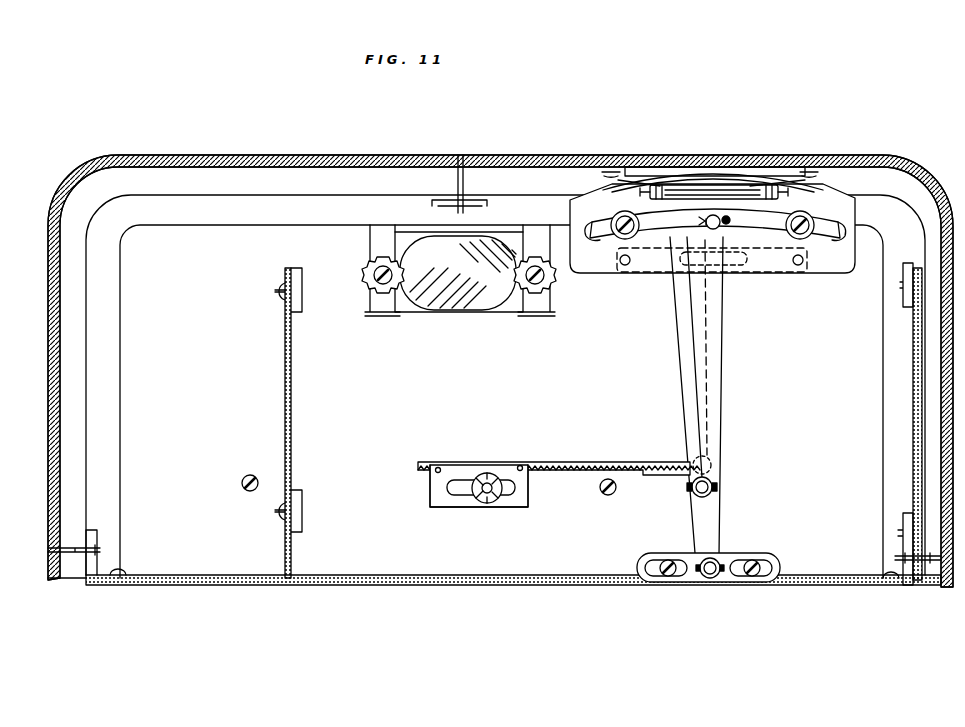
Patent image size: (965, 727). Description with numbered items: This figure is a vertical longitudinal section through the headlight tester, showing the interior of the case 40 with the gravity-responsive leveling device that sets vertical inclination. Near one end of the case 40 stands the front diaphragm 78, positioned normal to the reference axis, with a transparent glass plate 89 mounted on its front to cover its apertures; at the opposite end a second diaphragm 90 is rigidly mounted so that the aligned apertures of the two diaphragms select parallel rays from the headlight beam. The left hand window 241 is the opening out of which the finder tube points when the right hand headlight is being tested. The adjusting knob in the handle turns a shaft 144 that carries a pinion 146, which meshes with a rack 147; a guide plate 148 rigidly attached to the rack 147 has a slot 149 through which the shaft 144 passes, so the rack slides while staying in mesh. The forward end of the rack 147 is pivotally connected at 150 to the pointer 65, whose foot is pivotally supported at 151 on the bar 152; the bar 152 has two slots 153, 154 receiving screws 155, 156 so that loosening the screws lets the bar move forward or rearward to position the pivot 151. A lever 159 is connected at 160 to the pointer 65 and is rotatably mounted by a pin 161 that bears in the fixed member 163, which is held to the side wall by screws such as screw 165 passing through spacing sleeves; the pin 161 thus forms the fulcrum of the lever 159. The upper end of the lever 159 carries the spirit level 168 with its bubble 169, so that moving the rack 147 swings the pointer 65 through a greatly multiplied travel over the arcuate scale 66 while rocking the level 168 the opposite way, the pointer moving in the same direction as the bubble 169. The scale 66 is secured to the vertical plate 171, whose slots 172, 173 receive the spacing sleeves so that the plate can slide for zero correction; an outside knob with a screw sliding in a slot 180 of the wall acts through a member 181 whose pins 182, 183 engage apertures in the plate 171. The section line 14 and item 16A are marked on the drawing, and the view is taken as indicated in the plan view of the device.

The section line 14- 14 is at (712, 152).
The case 40 is at (48, 348).
The second diaphragm 90 is at (291, 428).
The transparent glass plate 89 is at (913, 392).
The diaphragm 78 is at (913, 462).
The left hand window 241 is at (463, 298).
The scale 66 is at (812, 190).
The spirit level 168 is at (703, 188).
The bubble 169 is at (727, 183).
The vertical plate 171 is at (830, 274).
The screw 165 is at (616, 212).
The pivot screw 16A is at (808, 216).
The slot 173 is at (612, 234).
The slot 172 is at (822, 240).
The pin 161 is at (722, 226).
The member 163 is at (771, 236).
The slot 180 is at (737, 274).
The member 181 is at (769, 268).
The pin 182 is at (625, 268).
The pin 183 is at (800, 268).
The pointer 65 is at (686, 420).
The lever 159 is at (717, 357).
The pivotal connection 150 is at (713, 451).
The connection 160 is at (715, 489).
The rack 147 is at (563, 462).
The guide plate 148 is at (436, 494).
The slot 149 is at (470, 498).
The shaft 144 is at (489, 503).
The pinion 146 is at (512, 500).
The bar 152 is at (683, 582).
The slot 153 is at (656, 582).
The slot 154 is at (760, 582).
The screw 155 is at (668, 560).
The screw 156 is at (757, 562).
The pivot 151 is at (716, 560).